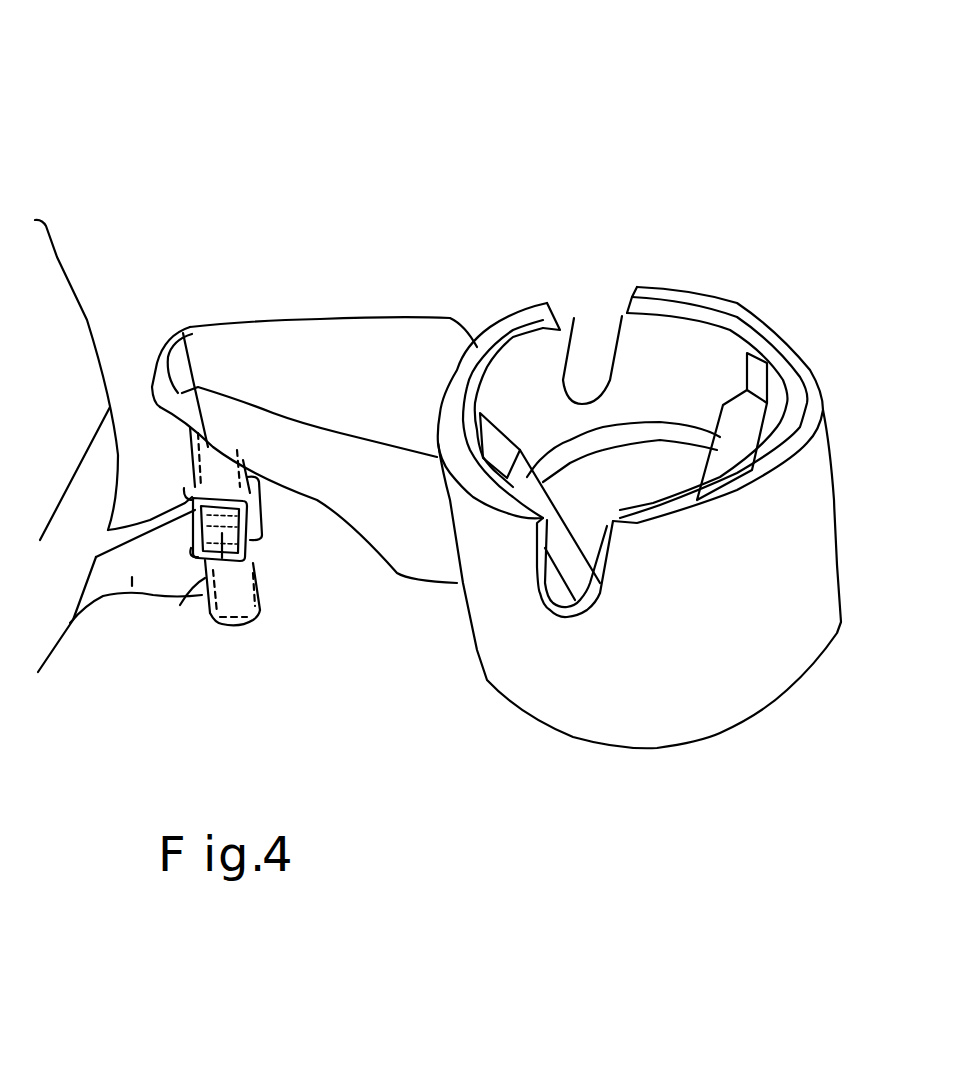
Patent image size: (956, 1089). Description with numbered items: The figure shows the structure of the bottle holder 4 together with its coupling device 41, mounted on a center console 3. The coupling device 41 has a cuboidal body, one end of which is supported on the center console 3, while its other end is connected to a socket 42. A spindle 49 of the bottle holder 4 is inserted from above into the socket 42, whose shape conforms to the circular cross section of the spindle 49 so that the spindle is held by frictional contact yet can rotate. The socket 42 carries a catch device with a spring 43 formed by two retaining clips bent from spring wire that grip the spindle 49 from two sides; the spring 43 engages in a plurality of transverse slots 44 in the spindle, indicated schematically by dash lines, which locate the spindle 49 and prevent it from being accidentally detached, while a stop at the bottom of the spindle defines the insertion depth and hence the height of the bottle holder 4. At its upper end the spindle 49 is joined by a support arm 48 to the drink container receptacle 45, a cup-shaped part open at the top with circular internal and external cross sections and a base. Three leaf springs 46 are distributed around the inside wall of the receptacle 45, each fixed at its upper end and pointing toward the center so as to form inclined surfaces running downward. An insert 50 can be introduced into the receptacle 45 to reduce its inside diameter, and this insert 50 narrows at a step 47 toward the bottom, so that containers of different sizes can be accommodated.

The center console 3 is at (45, 320).
The bottle holder 4 is at (463, 743).
The coupling device 41 is at (103, 590).
The socket 42 is at (180, 605).
The spring 43 is at (177, 458).
The transverse slots 44 is at (260, 625).
The drink container receptacle 45 is at (707, 630).
The leaf springs 46 is at (737, 427).
The step 47 is at (613, 433).
The support arm 48 is at (360, 322).
The spindle 49 is at (188, 333).
The insert 50 is at (540, 323).